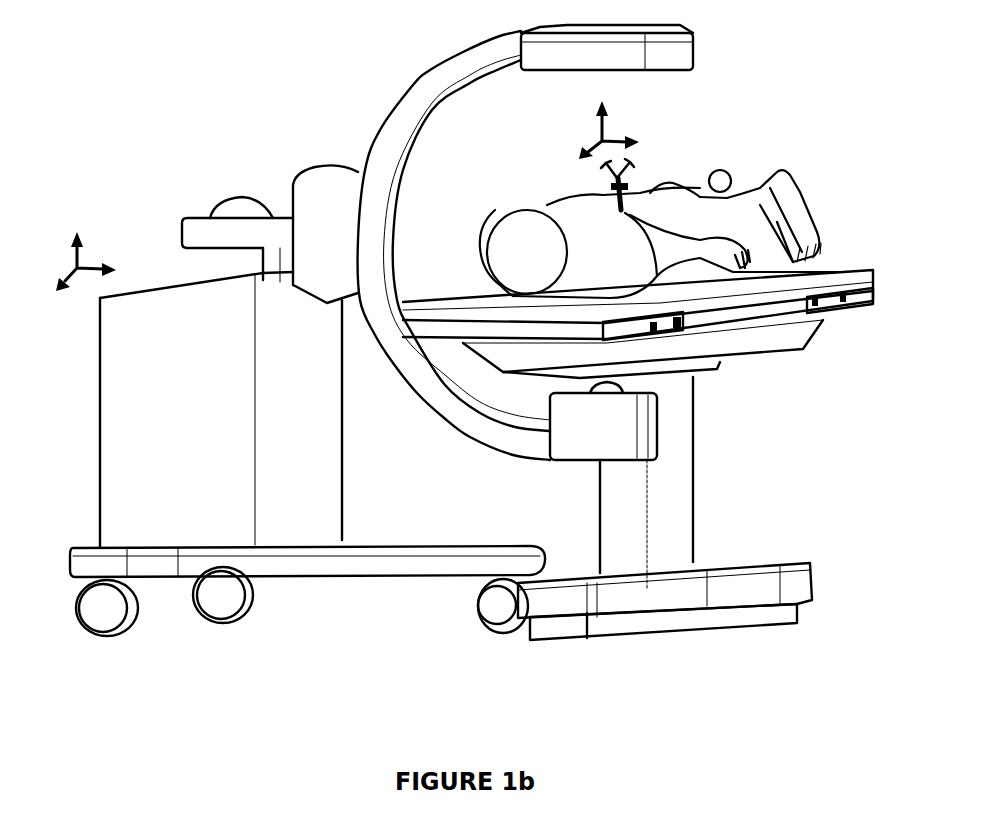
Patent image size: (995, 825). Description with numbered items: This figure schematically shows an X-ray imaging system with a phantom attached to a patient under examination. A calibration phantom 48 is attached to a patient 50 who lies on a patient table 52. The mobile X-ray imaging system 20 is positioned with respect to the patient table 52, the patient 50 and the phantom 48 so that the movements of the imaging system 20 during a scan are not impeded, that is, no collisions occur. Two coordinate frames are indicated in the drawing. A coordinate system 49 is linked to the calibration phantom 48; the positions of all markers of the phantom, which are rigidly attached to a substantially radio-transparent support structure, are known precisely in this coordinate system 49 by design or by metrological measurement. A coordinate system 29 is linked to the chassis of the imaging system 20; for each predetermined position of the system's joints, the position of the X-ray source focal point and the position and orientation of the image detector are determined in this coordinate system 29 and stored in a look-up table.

The mobile X-ray imaging system 20 is at (330, 115).
The coordinate system 29 is at (93, 258).
The calibration phantom 48 is at (655, 153).
The coordinate system 49 is at (618, 124).
The patient 50 is at (597, 217).
The patient table 52 is at (708, 313).